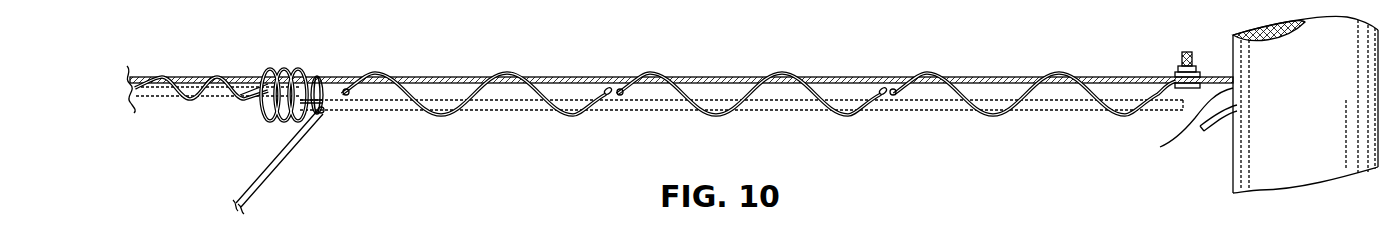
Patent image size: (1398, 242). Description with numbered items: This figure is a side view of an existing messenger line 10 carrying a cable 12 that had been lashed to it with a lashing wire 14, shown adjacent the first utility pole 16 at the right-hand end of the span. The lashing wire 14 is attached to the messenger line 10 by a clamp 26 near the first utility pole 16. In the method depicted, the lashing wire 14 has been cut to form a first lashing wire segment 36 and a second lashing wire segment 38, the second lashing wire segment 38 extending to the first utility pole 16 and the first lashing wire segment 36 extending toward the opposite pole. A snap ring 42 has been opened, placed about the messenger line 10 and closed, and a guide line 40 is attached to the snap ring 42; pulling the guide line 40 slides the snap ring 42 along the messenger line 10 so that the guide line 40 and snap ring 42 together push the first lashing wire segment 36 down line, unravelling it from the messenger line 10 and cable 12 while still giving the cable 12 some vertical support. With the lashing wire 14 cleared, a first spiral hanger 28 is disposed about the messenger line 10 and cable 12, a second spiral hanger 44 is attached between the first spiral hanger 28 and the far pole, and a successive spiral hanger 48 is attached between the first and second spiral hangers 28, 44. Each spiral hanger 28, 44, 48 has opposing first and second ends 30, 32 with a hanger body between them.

The messenger line 10 is at (680, 79).
The cable 12 is at (163, 93).
The lashing wire 14 is at (237, 99).
The first utility pole 16 is at (1292, 108).
The clamp 26 is at (1177, 72).
The first spiral hanger 28 is at (970, 88).
The first end 30 is at (350, 96).
The second end 32 is at (607, 98).
The first lashing wire segment 36 is at (283, 70).
The second lashing wire segment 38 is at (1175, 147).
The guide line 40 is at (247, 180).
The snap ring 42 is at (323, 80).
The second spiral hanger 44 is at (415, 85).
The successive spiral hanger 48 is at (690, 86).